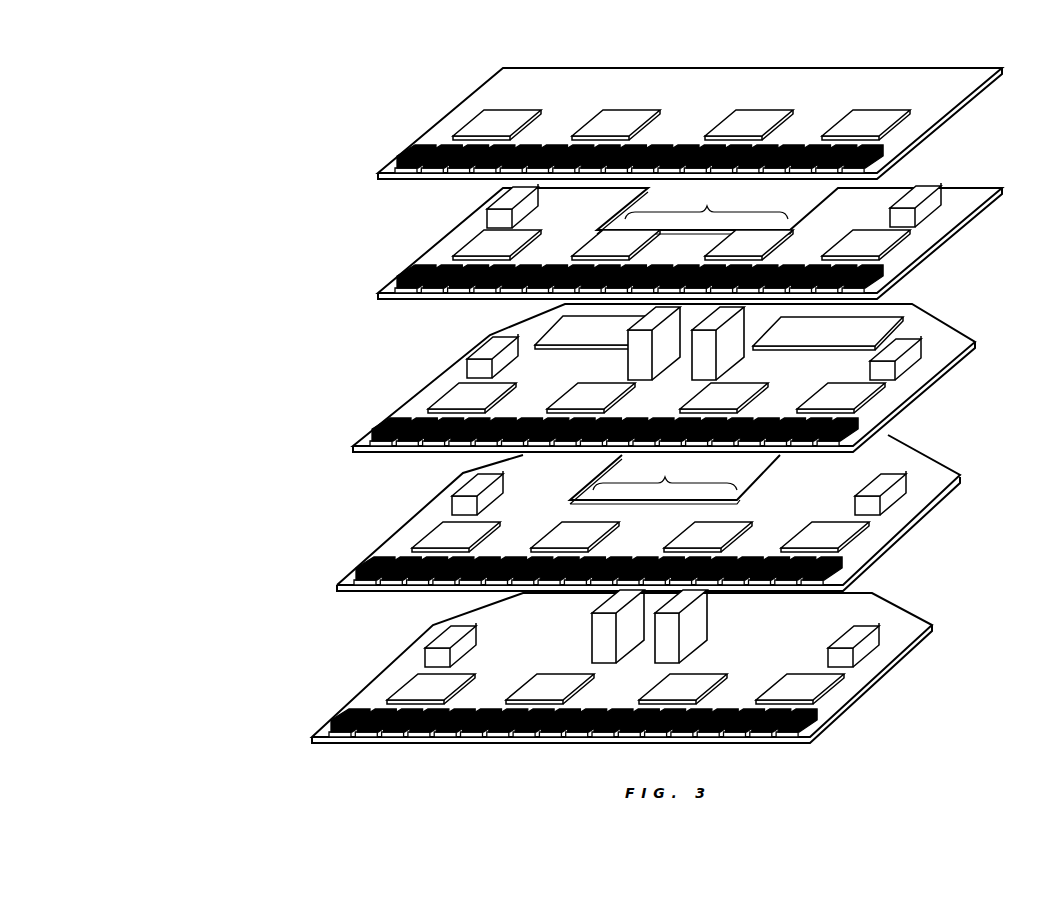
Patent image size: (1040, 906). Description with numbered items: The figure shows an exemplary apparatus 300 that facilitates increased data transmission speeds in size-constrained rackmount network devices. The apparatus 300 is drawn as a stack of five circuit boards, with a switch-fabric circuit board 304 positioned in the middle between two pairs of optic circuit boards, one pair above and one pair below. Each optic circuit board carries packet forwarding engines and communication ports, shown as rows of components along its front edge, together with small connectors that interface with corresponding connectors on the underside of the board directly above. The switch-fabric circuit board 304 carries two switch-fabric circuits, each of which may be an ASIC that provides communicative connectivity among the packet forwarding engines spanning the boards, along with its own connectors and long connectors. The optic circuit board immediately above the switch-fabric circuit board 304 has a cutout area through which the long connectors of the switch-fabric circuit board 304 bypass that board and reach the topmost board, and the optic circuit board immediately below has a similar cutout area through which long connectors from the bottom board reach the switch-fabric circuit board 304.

The apparatus 300 is at (205, 117).
The switch-fabric circuit board 304 is at (415, 392).